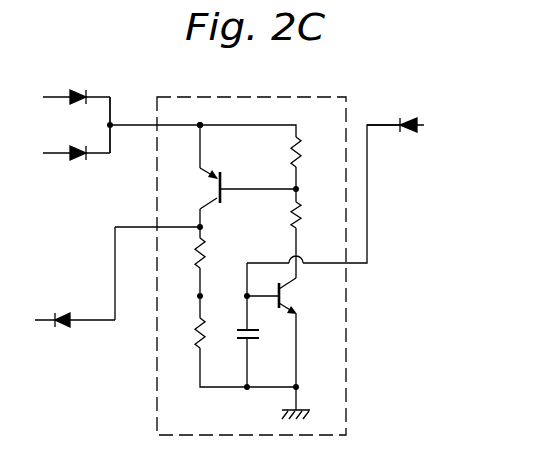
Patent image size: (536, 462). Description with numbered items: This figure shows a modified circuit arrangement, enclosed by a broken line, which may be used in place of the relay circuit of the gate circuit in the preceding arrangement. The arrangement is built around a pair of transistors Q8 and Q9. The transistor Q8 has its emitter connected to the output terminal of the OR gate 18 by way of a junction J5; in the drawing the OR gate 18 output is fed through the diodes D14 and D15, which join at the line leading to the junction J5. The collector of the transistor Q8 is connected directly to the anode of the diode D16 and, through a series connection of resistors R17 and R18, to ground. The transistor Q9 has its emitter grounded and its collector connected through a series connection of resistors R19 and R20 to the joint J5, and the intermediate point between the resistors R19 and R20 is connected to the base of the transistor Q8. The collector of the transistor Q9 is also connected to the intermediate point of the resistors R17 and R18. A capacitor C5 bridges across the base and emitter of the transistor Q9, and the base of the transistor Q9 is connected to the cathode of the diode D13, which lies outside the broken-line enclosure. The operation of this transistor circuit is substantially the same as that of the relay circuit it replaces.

The diode D14 is at (80, 89).
The diode D15 is at (80, 162).
The diode D16 is at (62, 311).
The diode D13 is at (405, 135).
The OR gate 18 is at (112, 160).
The junction J5 is at (203, 127).
The transistor Q8 is at (213, 191).
The transistor Q9 is at (290, 292).
The resistor R17 is at (198, 251).
The resistor R18 is at (198, 331).
The resistor R19 is at (299, 152).
The resistor R20 is at (298, 213).
The capacitor C5 is at (261, 337).